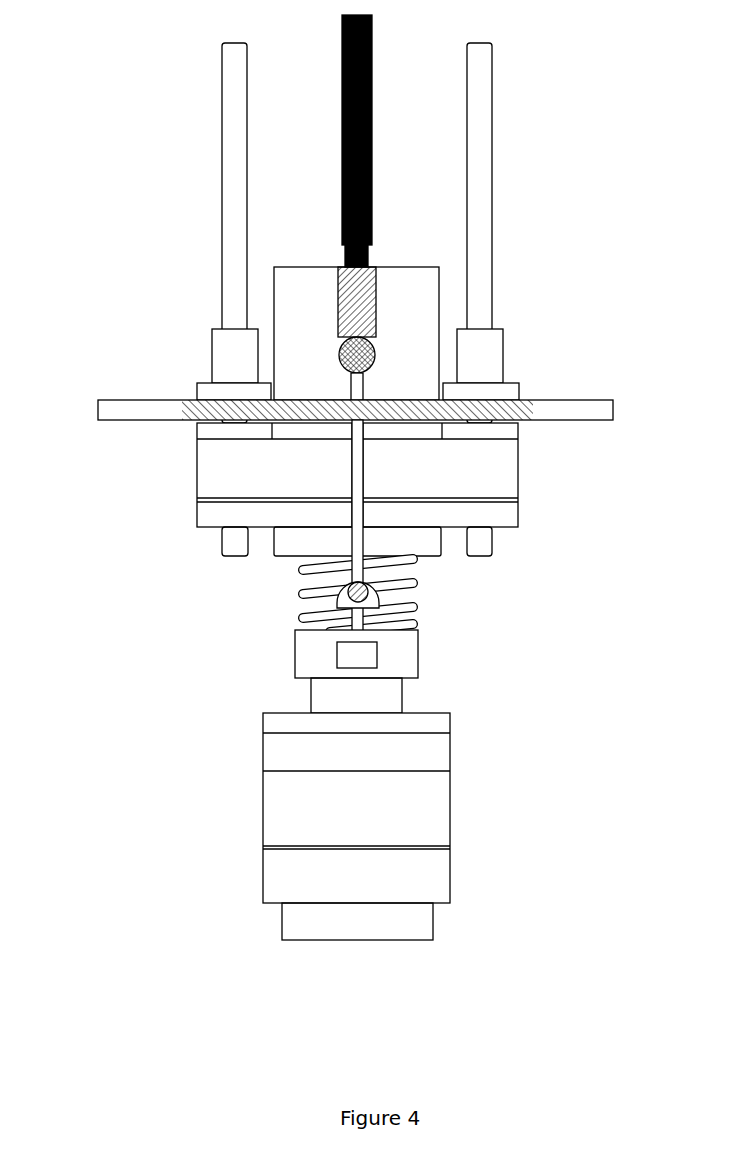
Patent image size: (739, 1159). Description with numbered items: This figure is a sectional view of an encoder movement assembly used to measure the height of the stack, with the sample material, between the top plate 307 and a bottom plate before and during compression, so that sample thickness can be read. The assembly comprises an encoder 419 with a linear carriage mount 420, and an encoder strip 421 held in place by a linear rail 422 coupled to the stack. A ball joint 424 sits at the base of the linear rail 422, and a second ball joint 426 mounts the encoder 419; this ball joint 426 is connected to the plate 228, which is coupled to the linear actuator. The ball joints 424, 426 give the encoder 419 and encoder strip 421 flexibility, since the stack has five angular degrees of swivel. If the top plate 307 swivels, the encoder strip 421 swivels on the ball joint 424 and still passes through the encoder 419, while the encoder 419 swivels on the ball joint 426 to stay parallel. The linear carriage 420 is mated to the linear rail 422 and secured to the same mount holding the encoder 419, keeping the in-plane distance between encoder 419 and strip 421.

The linear carriage mount 420 is at (336, 284).
The encoder 419 is at (376, 300).
The second ball joint 426 is at (340, 349).
The encoder strip 421 is at (363, 384).
The plate 228 is at (120, 428).
The linear rail 422 is at (367, 452).
The ball joint 424 is at (367, 593).
The top plate 307 is at (424, 947).